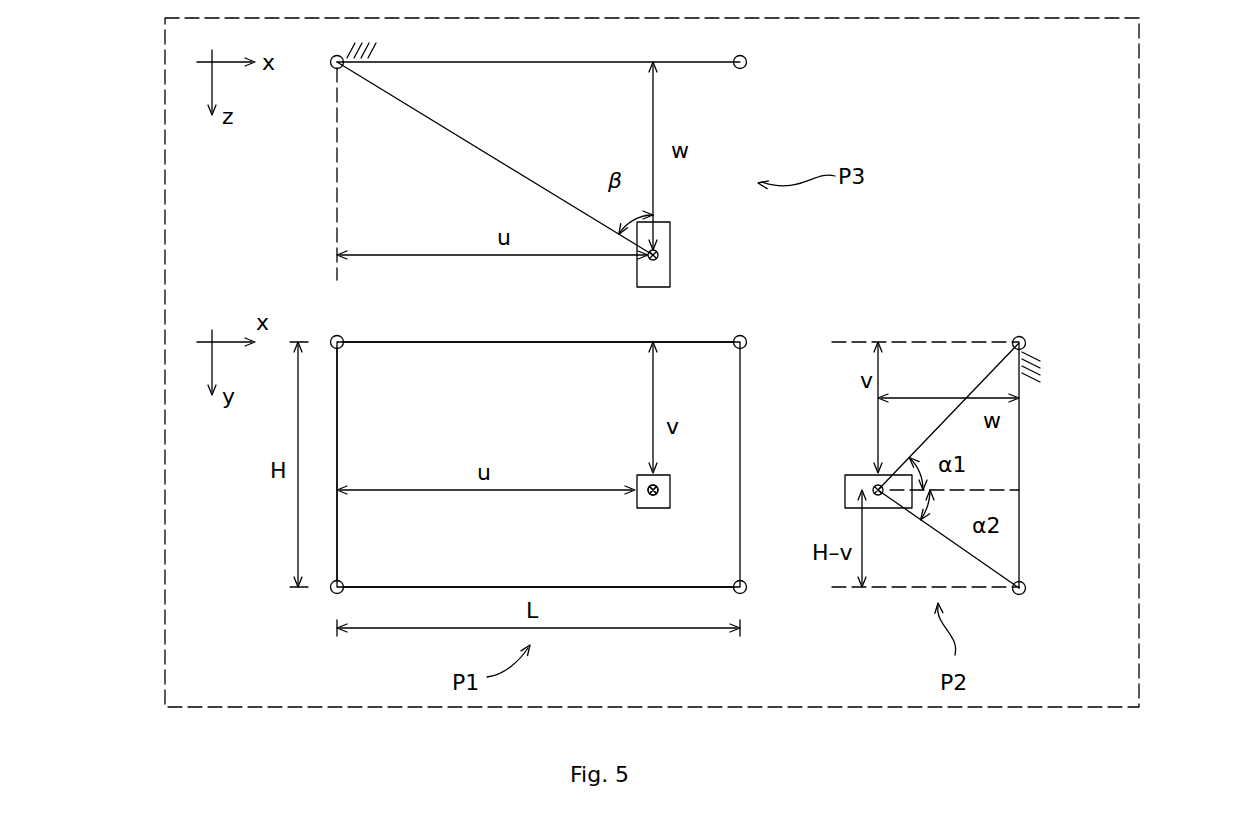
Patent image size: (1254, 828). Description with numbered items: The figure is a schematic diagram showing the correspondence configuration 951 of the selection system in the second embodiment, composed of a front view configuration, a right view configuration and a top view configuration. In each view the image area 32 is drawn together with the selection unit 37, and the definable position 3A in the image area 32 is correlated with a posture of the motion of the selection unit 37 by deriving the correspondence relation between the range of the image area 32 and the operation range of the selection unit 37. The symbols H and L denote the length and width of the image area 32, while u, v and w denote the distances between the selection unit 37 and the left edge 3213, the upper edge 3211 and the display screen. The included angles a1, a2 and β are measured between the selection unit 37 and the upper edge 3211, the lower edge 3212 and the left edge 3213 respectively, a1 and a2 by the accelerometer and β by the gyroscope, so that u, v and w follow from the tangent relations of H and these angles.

The correspondence configuration 951 is at (1140, 126).
The image area 32 is at (700, 62).
The selection unit 37 is at (663, 272).
The definable position 3A is at (660, 495).
The left edge 3213 is at (337, 377).
The upper edge 3211 is at (533, 342).
The lower edge 3212 is at (492, 587).